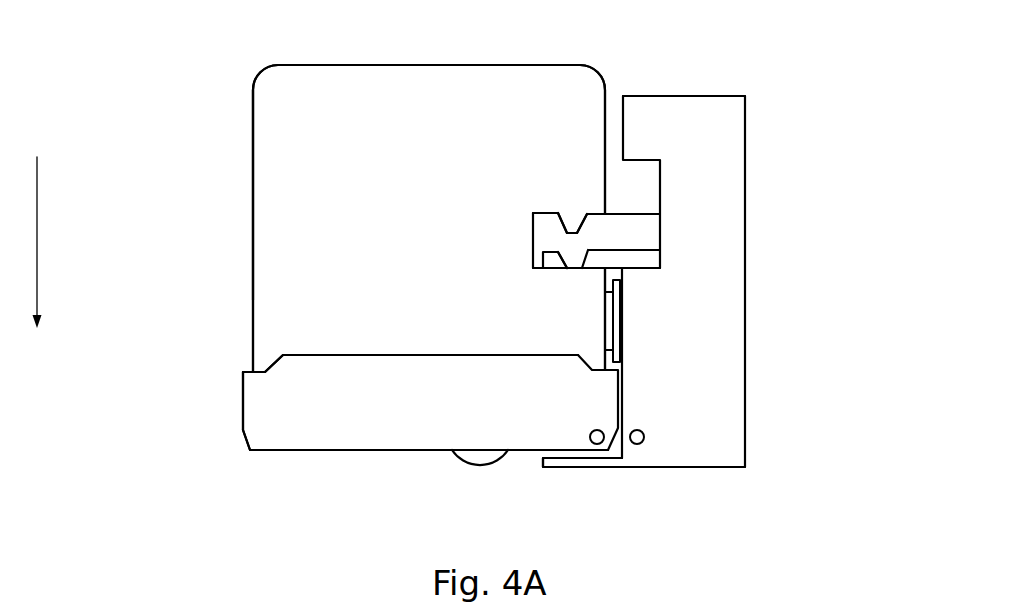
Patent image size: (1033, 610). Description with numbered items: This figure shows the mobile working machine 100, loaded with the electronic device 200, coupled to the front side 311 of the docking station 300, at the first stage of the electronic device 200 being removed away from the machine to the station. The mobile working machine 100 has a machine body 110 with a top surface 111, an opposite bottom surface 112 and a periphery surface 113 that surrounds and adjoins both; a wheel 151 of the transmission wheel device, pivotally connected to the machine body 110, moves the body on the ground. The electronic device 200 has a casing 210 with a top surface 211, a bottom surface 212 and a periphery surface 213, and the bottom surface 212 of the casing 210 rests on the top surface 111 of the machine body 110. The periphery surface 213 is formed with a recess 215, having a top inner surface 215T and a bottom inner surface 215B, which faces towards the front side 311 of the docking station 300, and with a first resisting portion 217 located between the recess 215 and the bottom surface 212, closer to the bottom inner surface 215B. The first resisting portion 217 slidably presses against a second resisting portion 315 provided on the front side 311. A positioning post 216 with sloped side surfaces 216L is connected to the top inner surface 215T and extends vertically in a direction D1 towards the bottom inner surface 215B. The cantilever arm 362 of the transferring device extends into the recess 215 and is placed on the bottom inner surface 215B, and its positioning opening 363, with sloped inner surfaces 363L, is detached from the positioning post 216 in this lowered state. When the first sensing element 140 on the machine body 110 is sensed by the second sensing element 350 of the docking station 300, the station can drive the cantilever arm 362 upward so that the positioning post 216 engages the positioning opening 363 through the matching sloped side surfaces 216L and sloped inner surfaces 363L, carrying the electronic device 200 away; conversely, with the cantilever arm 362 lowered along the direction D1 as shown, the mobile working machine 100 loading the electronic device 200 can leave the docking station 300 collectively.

The direction D1 is at (21, 242).
The mobile working machine 100 is at (408, 463).
The machine body 110 is at (153, 352).
The top surface 111 is at (246, 369).
The bottom surface 112 is at (290, 449).
The periphery surface 113 is at (250, 418).
The first sensing element 140 is at (597, 445).
The wheel 151 is at (477, 458).
The electronic device 200 is at (391, 66).
The casing 210 is at (150, 50).
The top surface 211 is at (300, 66).
The bottom surface 212 is at (320, 355).
The periphery surface 213 is at (256, 205).
The recess 215 is at (535, 240).
The top inner surface 215T is at (550, 213).
The bottom inner surface 215B is at (540, 268).
The positioning post 216 is at (568, 222).
The sloped side surface 216L is at (585, 220).
The first resisting portion 217 is at (610, 317).
The docking station 300 is at (724, 100).
The front side 311 is at (619, 100).
The second resisting portion 315 is at (618, 335).
The second sensing element 350 is at (637, 445).
The cantilever arm 362 is at (550, 263).
The positioning opening 363 is at (573, 263).
The sloped inner surface 363L is at (585, 250).